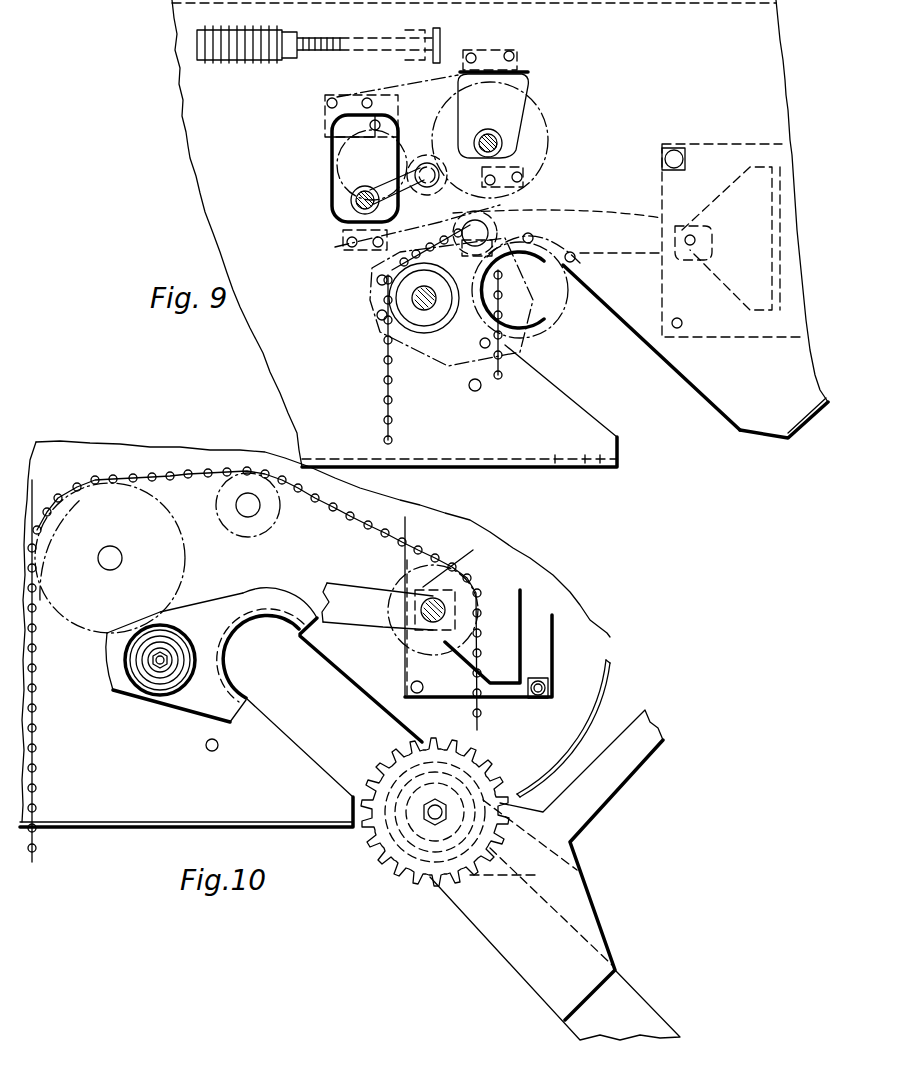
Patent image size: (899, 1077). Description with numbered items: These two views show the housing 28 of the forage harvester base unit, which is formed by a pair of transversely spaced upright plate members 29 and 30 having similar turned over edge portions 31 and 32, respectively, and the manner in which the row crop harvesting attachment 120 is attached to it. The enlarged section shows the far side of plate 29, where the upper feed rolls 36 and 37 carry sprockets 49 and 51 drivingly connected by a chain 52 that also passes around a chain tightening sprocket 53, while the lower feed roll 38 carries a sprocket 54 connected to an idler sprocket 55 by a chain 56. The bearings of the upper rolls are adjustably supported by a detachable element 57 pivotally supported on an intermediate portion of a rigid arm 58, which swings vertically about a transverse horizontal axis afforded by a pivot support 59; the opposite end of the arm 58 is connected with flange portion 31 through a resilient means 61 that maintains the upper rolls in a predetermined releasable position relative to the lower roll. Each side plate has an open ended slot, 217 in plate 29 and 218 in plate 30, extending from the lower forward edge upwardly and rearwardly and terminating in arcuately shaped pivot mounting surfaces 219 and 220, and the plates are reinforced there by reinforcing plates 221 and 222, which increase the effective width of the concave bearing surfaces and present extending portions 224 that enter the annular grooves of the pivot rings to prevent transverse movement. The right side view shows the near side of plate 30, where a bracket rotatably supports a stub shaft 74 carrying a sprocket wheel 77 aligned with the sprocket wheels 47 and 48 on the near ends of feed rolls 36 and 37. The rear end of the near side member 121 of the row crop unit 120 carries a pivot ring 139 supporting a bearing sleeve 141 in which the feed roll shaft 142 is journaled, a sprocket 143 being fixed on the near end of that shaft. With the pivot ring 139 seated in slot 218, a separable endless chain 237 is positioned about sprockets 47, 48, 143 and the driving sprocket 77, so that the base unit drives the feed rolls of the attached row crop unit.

In FIG. 9, the housing 28 is at (256, 154).
In FIG. 10, the housing 28 is at (100, 740).
In FIG. 9, the upright plate member 29 is at (184, 108).
In FIG. 10, the upright plate member 30 is at (88, 448).
In FIG. 9, the turned over edge portion 31 is at (574, 3).
In FIG. 10, the turned over edge portion 32 is at (220, 820).
In FIG. 9, the upper feed roll 36 is at (348, 224).
In FIG. 10, the upper feed roll 36 is at (112, 548).
In FIG. 9, the upper feed roll 37 is at (490, 128).
In FIG. 10, the upper feed roll 37 is at (245, 514).
In FIG. 9, the lower feed roll 38 is at (432, 312).
In FIG. 10, the lower feed roll 38 is at (172, 652).
In FIG. 10, the sprocket wheel 47 is at (66, 622).
In FIG. 10, the sprocket wheel 48 is at (268, 510).
In FIG. 9, the sprocket 49 is at (330, 214).
In FIG. 9, the sprocket 51 is at (546, 120).
In FIG. 9, the chain 52 is at (390, 96).
In FIG. 9, the chain tightening sprocket 53 is at (417, 161).
In FIG. 9, the sprocket 54 is at (410, 332).
In FIG. 9, the idler sprocket 55 is at (472, 248).
In FIG. 9, the chain 56 is at (512, 314).
In FIG. 9, the detachable element 57 is at (426, 161).
In FIG. 9, the rigid arm 58 is at (594, 212).
In FIG. 10, the rigid arm 58 is at (338, 592).
In FIG. 9, the pivot support 59 is at (702, 236).
In FIG. 10, the pivot support 59 is at (437, 628).
In FIG. 9, the resilient means 61 is at (248, 60).
In FIG. 10, the stub shaft 74 is at (442, 618).
In FIG. 10, the sprocket wheel 77 is at (404, 590).
In FIG. 10, the row crop harvesting attachment 120 is at (540, 932).
In FIG. 10, the outer side member 121 is at (648, 988).
In FIG. 10, the pivot ring 139 is at (425, 858).
In FIG. 10, the bearing sleeve 141 is at (400, 838).
In FIG. 10, the feed roll shaft 142 is at (446, 786).
In FIG. 10, the sprocket 143 is at (392, 762).
In FIG. 9, the open ended slot 217 is at (580, 396).
In FIG. 10, the open ended slot 218 is at (296, 746).
In FIG. 9, the arcuate pivot mounting surface 219 is at (522, 258).
In FIG. 10, the arcuate pivot mounting surface 220 is at (250, 628).
In FIG. 9, the reinforcing plate 221 is at (465, 356).
In FIG. 10, the reinforcing plate 222 is at (184, 714).
In FIG. 9, the extending portion 224 is at (563, 268).
In FIG. 10, the chain 237 is at (36, 784).